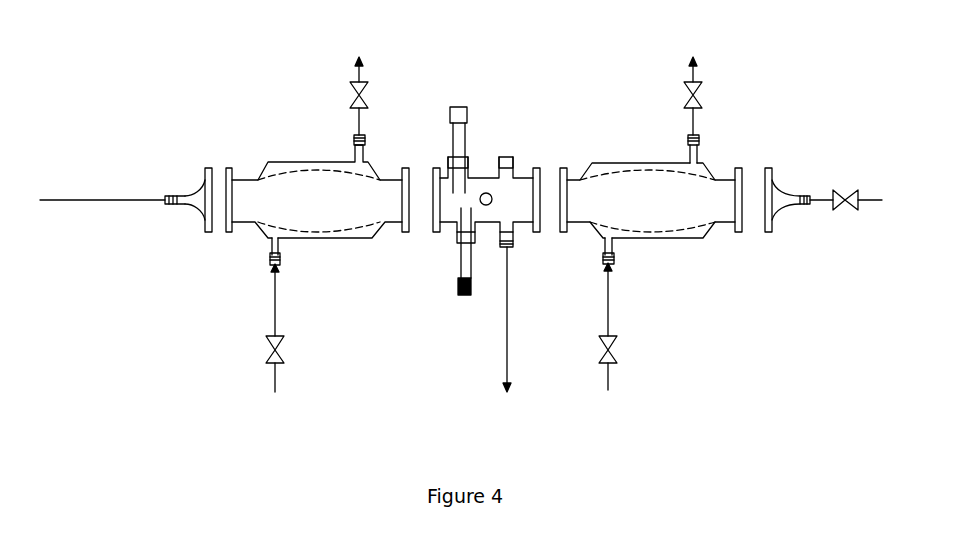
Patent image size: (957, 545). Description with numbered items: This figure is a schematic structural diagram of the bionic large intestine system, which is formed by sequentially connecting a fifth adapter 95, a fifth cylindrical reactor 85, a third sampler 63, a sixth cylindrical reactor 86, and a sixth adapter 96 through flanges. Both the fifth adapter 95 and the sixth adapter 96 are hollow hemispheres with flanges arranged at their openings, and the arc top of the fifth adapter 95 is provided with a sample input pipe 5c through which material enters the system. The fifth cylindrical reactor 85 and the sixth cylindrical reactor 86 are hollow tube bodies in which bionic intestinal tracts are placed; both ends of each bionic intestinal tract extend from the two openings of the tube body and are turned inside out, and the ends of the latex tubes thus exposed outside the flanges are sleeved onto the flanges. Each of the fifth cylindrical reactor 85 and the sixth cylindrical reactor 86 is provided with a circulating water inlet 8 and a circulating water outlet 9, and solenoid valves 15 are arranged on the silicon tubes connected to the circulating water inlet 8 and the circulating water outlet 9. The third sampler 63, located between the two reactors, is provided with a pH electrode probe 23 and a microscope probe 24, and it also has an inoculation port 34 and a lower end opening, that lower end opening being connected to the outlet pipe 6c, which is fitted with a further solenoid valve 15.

The sample input pipe 5c is at (82, 200).
The fifth adapter 95 is at (194, 183).
The fifth cylindrical reactor 85 is at (297, 162).
The solenoid valve 15 is at (352, 92).
The pH electrode probe 23 is at (456, 106).
The inoculation port 34 is at (507, 150).
The circulating water outlet 9 is at (688, 155).
The sixth adapter 96 is at (788, 180).
The circulating water inlet 8 is at (268, 256).
The third sampler 63 is at (436, 230).
The microscope probe 24 is at (457, 287).
The outlet pipe 6c is at (500, 352).
The sixth cylindrical reactor 86 is at (652, 237).